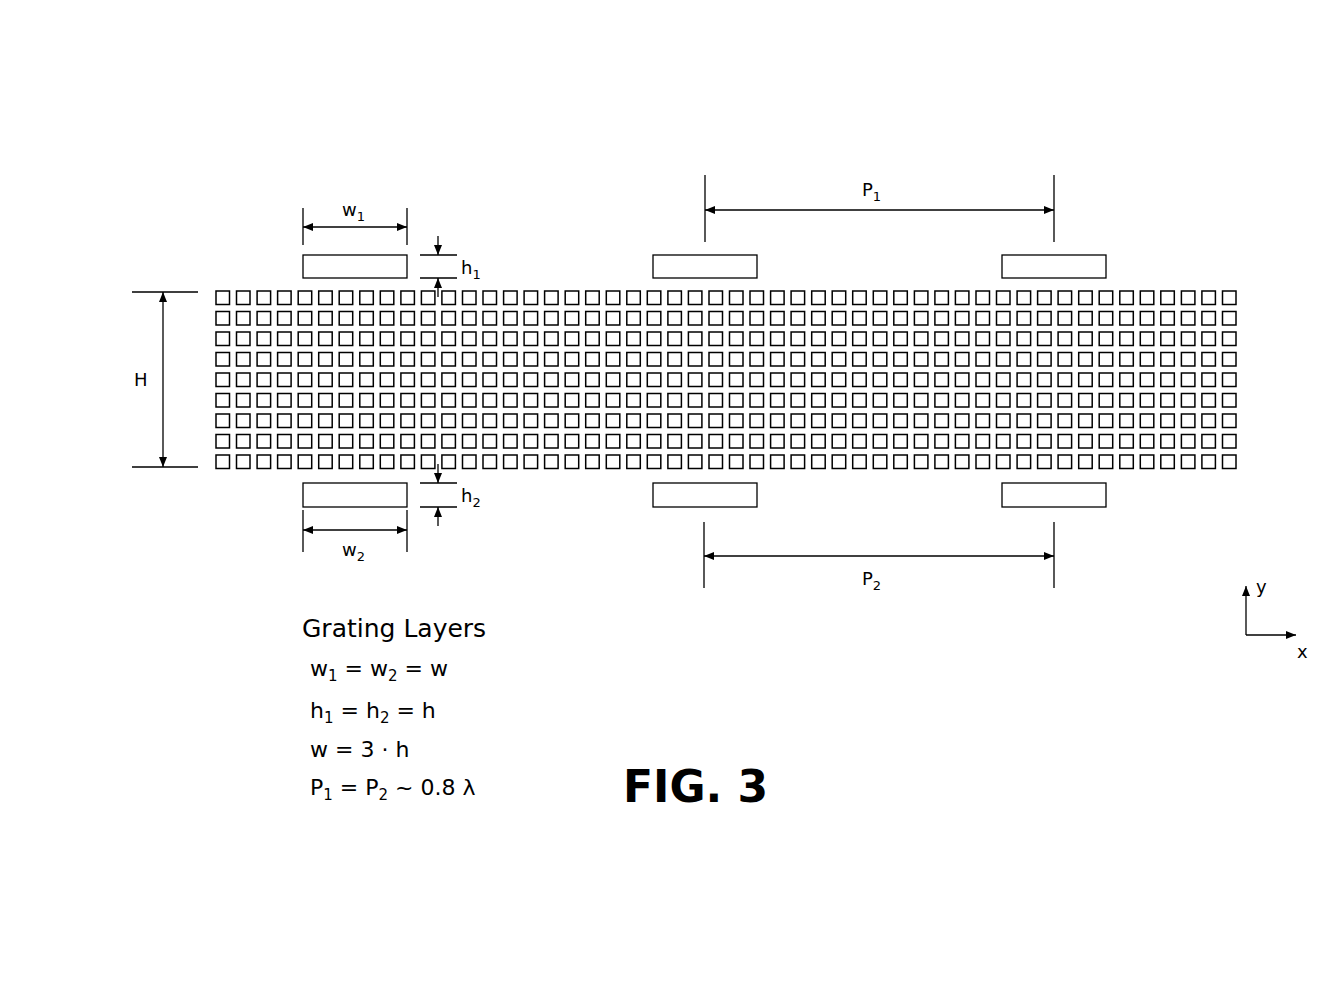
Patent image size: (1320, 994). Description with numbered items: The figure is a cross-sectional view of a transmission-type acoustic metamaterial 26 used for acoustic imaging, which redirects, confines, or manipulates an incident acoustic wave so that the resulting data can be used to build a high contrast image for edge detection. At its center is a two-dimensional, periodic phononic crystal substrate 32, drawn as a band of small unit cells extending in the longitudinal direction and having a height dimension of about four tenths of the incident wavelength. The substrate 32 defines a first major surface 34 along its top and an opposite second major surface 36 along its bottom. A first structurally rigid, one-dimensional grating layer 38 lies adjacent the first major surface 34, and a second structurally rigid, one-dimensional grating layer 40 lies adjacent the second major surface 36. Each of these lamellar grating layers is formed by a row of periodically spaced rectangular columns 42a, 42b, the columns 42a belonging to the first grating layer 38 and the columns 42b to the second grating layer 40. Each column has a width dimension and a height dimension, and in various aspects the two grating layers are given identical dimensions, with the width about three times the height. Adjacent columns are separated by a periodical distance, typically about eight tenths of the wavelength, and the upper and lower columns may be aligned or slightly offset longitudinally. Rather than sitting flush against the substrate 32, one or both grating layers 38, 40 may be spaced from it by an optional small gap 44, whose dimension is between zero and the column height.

The transmission-type acoustic metamaterial 26 is at (1166, 123).
The phononic crystal substrate 32 is at (1250, 283).
The first major surface 34 is at (1157, 285).
The second major surface 36 is at (1157, 477).
The first structurally rigid one-dimensional grating layer 38 is at (1250, 247).
The second structurally rigid one-dimensional grating layer 40 is at (1250, 480).
The periodically spaced rectangular column 42a is at (311, 268).
The periodically spaced rectangular column 42b is at (311, 493).
The gap 44 is at (646, 286).